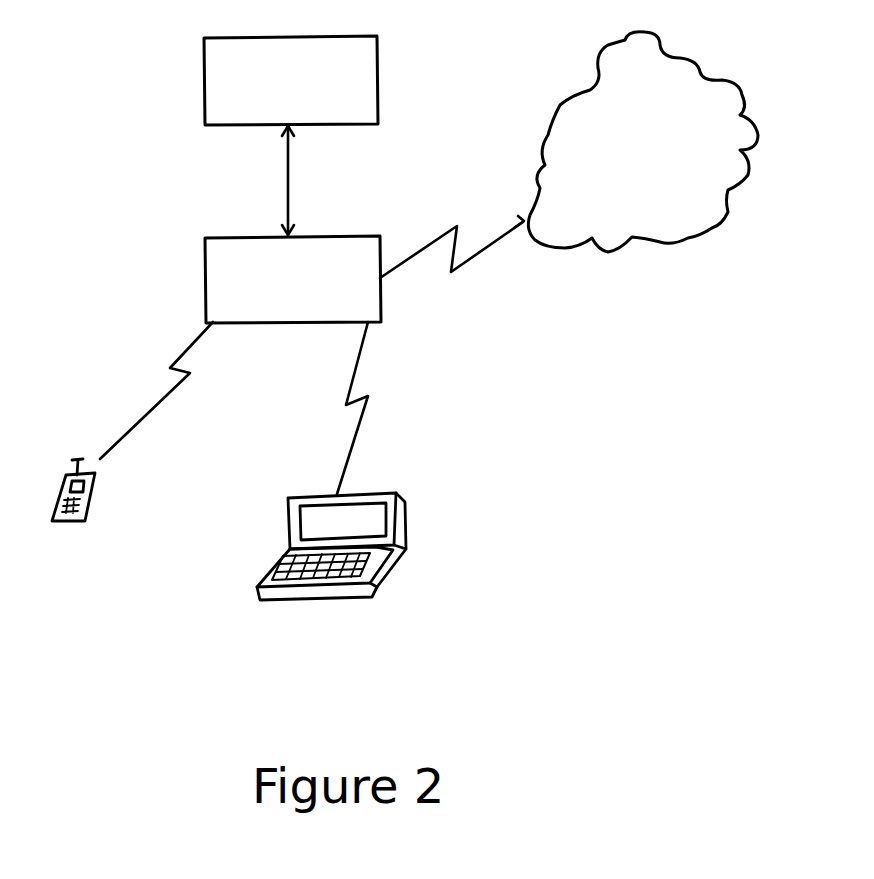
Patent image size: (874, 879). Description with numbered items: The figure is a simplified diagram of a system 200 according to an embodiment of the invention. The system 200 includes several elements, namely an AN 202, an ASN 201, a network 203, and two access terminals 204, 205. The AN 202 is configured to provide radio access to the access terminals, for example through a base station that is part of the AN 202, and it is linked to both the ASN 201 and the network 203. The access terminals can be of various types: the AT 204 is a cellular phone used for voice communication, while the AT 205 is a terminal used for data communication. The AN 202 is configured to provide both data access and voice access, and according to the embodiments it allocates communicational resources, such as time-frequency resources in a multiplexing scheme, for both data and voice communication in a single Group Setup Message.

The system 200 is at (765, 366).
The ASN 201 is at (380, 85).
The AN 202 is at (372, 230).
The network 203 is at (720, 222).
The access terminal 204 is at (93, 503).
The access terminal 205 is at (410, 522).